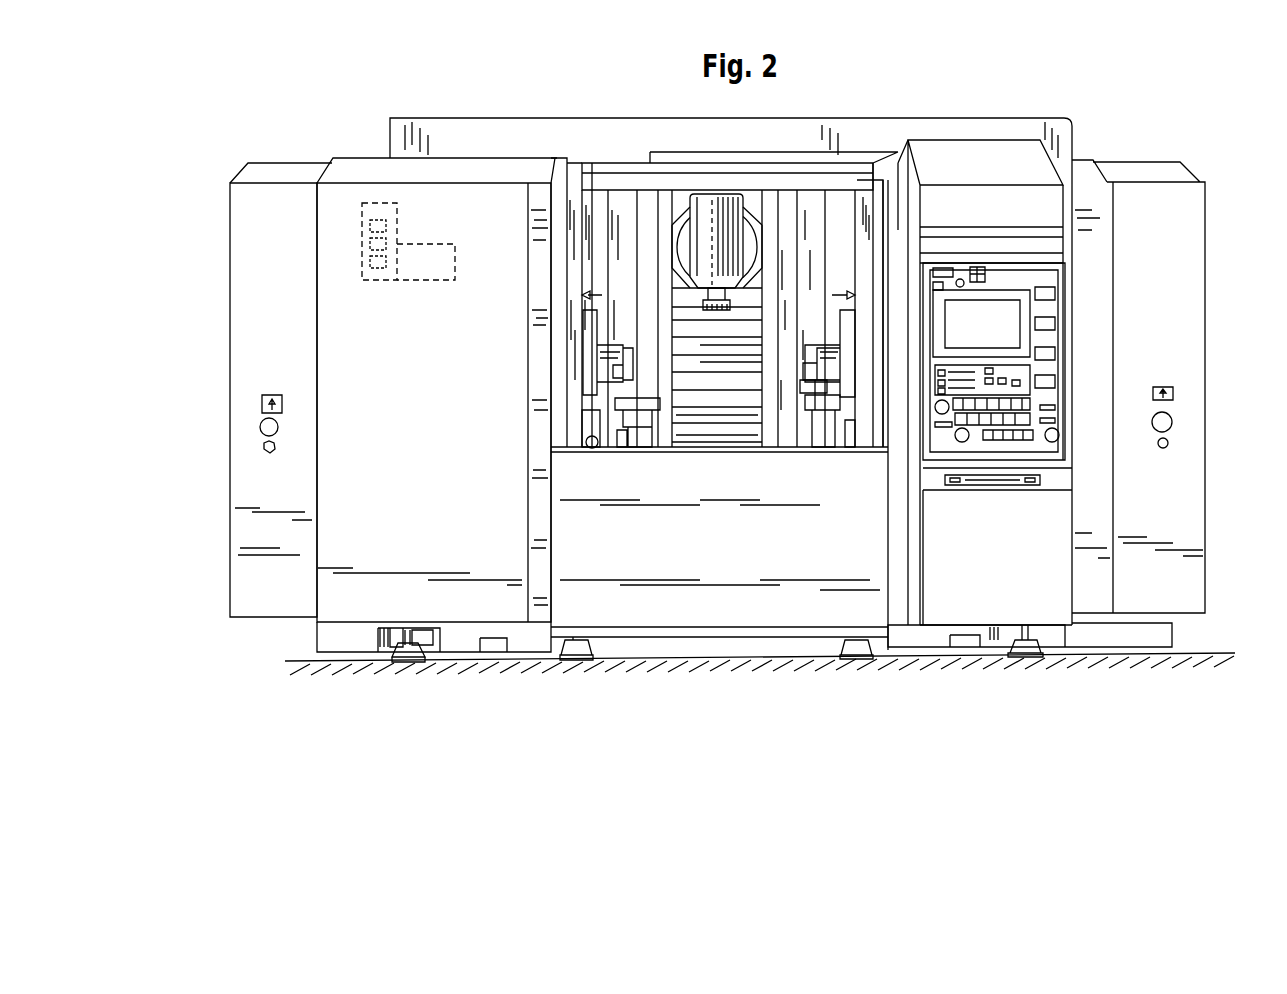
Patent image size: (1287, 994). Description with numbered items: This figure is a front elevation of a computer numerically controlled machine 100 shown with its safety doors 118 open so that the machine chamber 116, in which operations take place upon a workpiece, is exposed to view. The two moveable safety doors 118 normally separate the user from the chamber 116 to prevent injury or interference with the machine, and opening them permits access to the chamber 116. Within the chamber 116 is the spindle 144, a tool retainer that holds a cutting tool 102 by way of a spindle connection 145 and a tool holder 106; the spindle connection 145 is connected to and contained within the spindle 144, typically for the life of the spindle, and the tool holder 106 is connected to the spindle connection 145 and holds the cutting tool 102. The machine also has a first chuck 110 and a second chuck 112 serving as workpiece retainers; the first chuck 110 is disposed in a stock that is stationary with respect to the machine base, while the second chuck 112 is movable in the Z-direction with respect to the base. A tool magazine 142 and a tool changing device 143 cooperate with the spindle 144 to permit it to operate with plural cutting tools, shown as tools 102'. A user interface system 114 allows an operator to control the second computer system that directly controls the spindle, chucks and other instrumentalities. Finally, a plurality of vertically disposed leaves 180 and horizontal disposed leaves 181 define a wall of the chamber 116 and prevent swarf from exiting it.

The computer numerically controlled machine 100 is at (1172, 134).
The cutting tool 102 is at (717, 395).
The tools 102' is at (281, 236).
The tool holder 106 is at (700, 310).
The first chuck 110 is at (612, 383).
The second chuck 112 is at (825, 383).
The user interface system 114 is at (1067, 330).
The machine chamber 116 is at (760, 347).
The safety doors 118 is at (870, 185).
The tool magazine 142 is at (377, 203).
The tool changing device 143 is at (413, 275).
The spindle 144 is at (698, 212).
The spindle connection 145 is at (712, 290).
The vertically disposed leaves 180 is at (593, 207).
The horizontal disposed leaves 181 is at (768, 380).